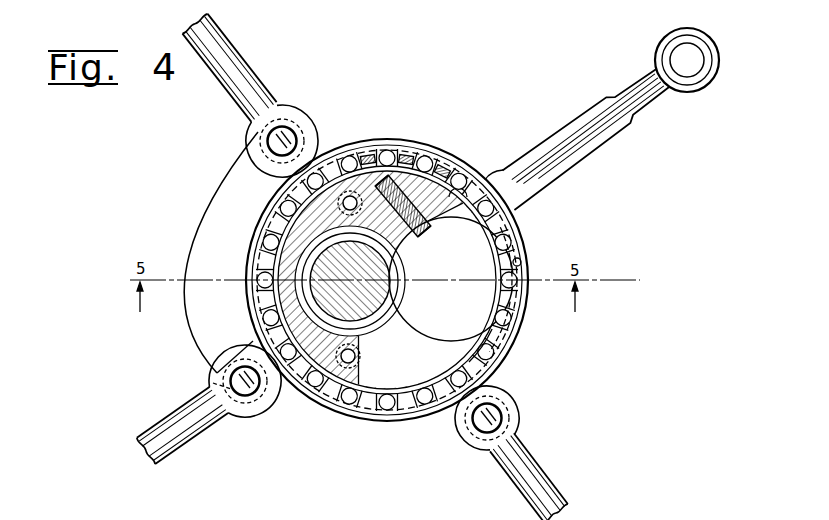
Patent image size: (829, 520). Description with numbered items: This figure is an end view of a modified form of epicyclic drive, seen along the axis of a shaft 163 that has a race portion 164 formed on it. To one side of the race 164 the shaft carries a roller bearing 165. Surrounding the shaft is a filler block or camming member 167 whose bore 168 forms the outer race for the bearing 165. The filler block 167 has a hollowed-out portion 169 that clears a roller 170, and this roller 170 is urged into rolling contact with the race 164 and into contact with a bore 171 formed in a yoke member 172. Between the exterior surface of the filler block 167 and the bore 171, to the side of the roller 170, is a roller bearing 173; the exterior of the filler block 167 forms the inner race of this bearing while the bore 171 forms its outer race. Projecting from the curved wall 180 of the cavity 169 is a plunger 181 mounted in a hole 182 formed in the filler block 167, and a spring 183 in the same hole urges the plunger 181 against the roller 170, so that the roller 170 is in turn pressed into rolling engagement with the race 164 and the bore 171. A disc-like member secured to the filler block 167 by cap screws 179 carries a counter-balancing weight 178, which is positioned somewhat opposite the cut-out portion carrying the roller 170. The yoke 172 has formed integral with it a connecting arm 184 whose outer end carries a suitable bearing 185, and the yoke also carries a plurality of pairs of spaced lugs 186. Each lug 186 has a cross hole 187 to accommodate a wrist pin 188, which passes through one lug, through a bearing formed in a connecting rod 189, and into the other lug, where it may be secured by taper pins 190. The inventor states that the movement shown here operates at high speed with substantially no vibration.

The shaft 163 is at (297, 303).
The race portion 164 is at (322, 240).
The roller bearing 165 is at (382, 318).
The filler block or camming member 167 is at (268, 225).
The bore 168 is at (293, 273).
The hollowed-out portion 169 is at (508, 217).
The roller 170 is at (505, 342).
The bore 171 is at (520, 260).
The yoke member 172 is at (432, 150).
The roller bearing 173 is at (497, 357).
The counter-balancing weight 178 is at (228, 160).
The cap screws 179 is at (358, 192).
The curved wall 180 is at (486, 177).
The plunger 181 is at (426, 225).
The hole 182 is at (413, 188).
The spring 183 is at (410, 172).
The connecting arm 184 is at (593, 140).
The bearing 185 is at (696, 76).
The spaced lugs 186 is at (296, 122).
The cross hole 187 is at (265, 403).
The wrist pin 188 is at (233, 373).
The connecting rod 189 is at (238, 68).
The taper pins 190 is at (213, 383).